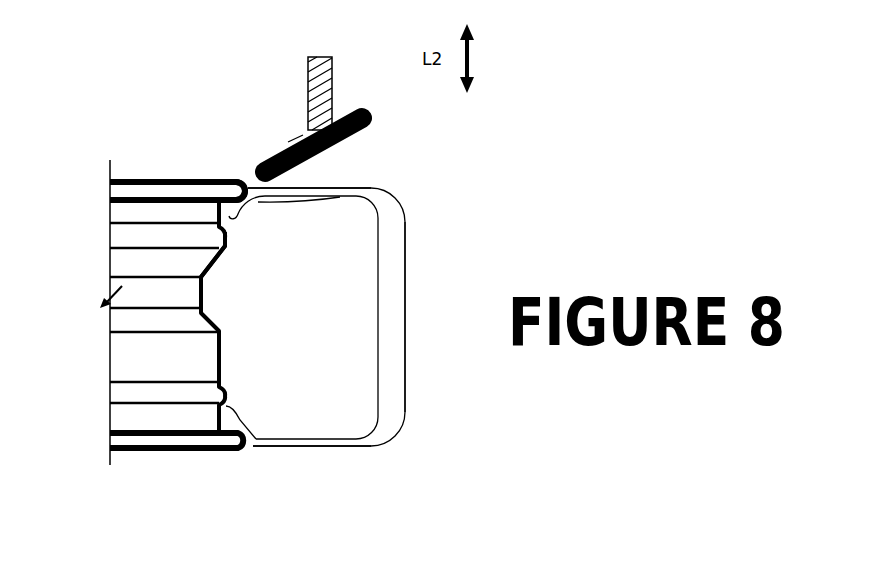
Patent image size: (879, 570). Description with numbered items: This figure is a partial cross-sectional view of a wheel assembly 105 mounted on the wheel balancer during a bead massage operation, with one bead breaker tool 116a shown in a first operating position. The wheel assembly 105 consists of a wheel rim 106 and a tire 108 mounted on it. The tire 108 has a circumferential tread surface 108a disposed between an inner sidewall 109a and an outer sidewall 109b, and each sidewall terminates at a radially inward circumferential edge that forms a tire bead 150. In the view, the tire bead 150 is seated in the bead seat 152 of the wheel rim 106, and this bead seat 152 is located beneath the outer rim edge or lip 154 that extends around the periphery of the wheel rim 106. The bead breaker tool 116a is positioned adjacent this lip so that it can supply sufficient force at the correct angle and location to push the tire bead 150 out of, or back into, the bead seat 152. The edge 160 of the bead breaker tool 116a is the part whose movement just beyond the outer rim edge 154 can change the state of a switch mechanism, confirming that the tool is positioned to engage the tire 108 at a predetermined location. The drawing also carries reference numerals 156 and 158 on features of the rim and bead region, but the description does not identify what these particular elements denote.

The wheel assembly 105 is at (163, 451).
The wheel rim 106 is at (180, 167).
The tire 108 is at (425, 202).
The circumferential tread surface 108a is at (405, 363).
The inner sidewall 109a is at (322, 448).
The outer sidewall 109b is at (340, 186).
The bead breaker tool 116a is at (345, 145).
The tire bead 150 is at (237, 220).
The bead seat 152 is at (212, 208).
The outer rim edge 154 is at (243, 177).
The recess 156 is at (227, 240).
The groove 158 is at (198, 297).
The edge of bead breaker tool 160 is at (253, 175).